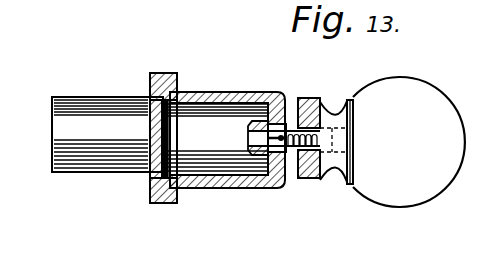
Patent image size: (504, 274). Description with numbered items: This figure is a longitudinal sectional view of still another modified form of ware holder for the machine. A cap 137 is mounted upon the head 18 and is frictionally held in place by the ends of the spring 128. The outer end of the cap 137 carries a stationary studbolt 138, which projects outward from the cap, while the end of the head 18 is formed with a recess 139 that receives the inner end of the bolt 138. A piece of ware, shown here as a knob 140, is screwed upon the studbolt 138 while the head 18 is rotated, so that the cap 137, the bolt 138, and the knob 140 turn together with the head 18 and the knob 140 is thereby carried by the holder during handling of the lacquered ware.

The head 18 is at (212, 153).
The spring 128 is at (200, 186).
The cap 137 is at (305, 72).
The studbolt 138 is at (288, 102).
The recess 139 is at (265, 188).
The knob 140 is at (391, 120).